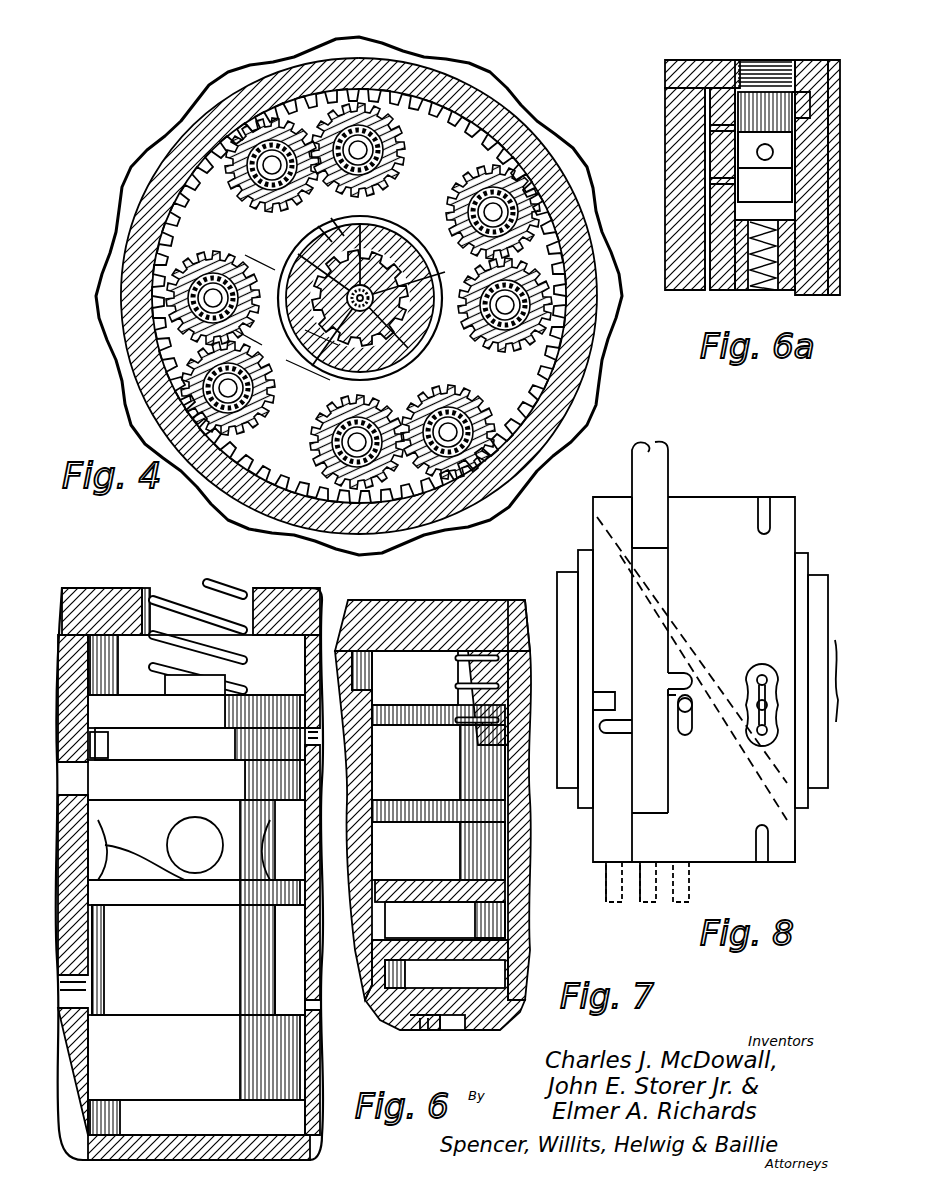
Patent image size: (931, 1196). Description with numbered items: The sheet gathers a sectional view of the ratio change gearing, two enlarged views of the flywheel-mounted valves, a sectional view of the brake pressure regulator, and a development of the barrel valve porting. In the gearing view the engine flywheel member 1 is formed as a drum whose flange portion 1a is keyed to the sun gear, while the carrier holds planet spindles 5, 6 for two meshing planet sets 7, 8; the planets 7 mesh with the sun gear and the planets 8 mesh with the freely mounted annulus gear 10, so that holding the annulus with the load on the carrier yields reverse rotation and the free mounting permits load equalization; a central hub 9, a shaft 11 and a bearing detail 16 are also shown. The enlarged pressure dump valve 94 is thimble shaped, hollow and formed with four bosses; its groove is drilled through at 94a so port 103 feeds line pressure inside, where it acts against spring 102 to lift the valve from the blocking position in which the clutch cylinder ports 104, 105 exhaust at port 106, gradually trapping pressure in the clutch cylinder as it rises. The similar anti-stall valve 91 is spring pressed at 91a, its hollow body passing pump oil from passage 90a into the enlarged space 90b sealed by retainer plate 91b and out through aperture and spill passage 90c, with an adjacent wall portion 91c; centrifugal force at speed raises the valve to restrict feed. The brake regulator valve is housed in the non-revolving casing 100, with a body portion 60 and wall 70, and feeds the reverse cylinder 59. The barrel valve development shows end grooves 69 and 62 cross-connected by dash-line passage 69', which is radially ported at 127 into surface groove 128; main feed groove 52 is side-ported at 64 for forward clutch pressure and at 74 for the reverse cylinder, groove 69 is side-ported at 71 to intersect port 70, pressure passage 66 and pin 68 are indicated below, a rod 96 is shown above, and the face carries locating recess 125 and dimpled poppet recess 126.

In FIG. 6, the engine flywheel member 1 is at (95, 600).
In FIG. 7, the engine flywheel member 1 is at (520, 900).
In FIG. 4, the flange portion 1a is at (120, 240).
In FIG. 4, the planet spindle 5 is at (250, 195).
In FIG. 4, the planet spindle 6 is at (552, 286).
In FIG. 4, the planets 7 is at (428, 150).
In FIG. 8, the planets 7 is at (800, 835).
In FIG. 4, the planets 8 is at (240, 178).
In FIG. 4, the sun gear assembly 9 is at (361, 298).
In FIG. 4, the annulus gear 10 is at (170, 192).
In FIG. 4, the drive shaft 11 is at (310, 372).
In FIG. 4, the central hub 16 is at (400, 240).
In FIG. 8, the main feed channel 52 is at (668, 520).
In FIG. 6A, the reverse cylinder 59 is at (705, 106).
In FIG. 6A, the valve body 60 is at (700, 292).
In FIG. 8, the groove 62 is at (800, 550).
In FIG. 8, the side port 64 is at (684, 681).
In FIG. 8, the passage 66 is at (690, 890).
In FIG. 8, the pin 68 is at (648, 904).
In FIG. 8, the end groove 69 is at (666, 668).
In FIG. 8, the internal passage 69' is at (697, 614).
In FIG. 6A, the port 70 is at (830, 60).
In FIG. 8, the port 70 is at (615, 904).
In FIG. 8, the side port 71 is at (605, 692).
In FIG. 8, the side port 74 is at (616, 735).
In FIG. 7, the passage 90a is at (360, 715).
In FIG. 7, the enlarged space 90b is at (362, 676).
In FIG. 7, the aperture and spill passage 90c is at (450, 1030).
In FIG. 7, the anti-stall valve 91 is at (442, 920).
In FIG. 7, the spring 91a is at (480, 735).
In FIG. 7, the retainer plate 91b is at (415, 615).
In FIG. 7, the cap wall 91c is at (508, 620).
In FIG. 6A, the pressure dump valve 94 is at (745, 60).
In FIG. 6, the pressure dump valve 94 is at (210, 1082).
In FIG. 6, the drilled holes 94a is at (200, 870).
In FIG. 8, the rod 96 is at (660, 478).
In FIG. 4, the casing 100 is at (268, 265).
In FIG. 6A, the casing 100 is at (672, 74).
In FIG. 6A, the spring 102 is at (760, 290).
In FIG. 6, the spring 102 is at (200, 600).
In FIG. 6A, the port 103 is at (805, 175).
In FIG. 6, the port 103 is at (75, 800).
In FIG. 6A, the inlet port 104 is at (710, 181).
In FIG. 6, the inlet port 104 is at (305, 760).
In FIG. 6A, the delivery port 105 is at (710, 128).
In FIG. 6, the delivery port 105 is at (300, 962).
In FIG. 6A, the exhaust port 106 is at (805, 60).
In FIG. 6, the exhaust port 106 is at (72, 994).
In FIG. 8, the recess 125 is at (764, 510).
In FIG. 8, the recess 126 is at (755, 672).
In FIG. 8, the radial port 127 is at (690, 712).
In FIG. 8, the surface groove 128 is at (684, 738).